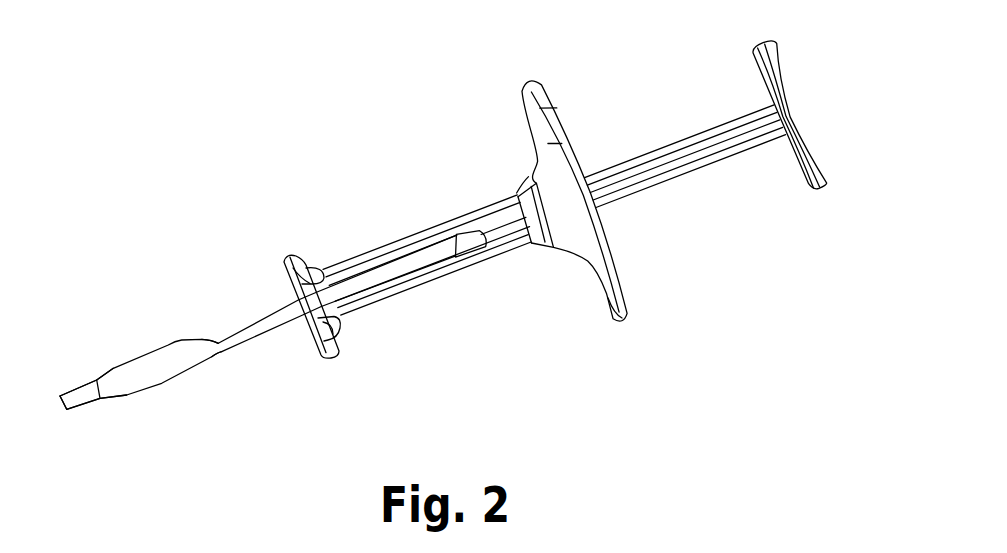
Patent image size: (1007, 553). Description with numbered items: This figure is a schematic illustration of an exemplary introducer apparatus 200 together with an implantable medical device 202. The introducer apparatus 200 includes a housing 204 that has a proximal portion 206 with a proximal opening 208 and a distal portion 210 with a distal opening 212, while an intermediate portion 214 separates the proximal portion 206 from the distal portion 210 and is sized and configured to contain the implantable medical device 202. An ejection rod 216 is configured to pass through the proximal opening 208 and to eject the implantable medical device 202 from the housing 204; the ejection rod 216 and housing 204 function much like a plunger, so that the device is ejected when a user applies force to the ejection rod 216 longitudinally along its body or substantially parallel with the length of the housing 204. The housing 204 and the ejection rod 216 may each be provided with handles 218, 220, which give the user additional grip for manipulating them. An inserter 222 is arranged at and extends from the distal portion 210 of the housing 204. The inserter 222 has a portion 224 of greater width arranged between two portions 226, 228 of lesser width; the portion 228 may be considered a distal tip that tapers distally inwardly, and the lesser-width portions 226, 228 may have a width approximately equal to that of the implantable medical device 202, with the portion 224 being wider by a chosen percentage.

The introducer apparatus 200 is at (212, 163).
The implantable medical device 202 is at (417, 260).
The housing 204 is at (420, 197).
The proximal portion 206 is at (650, 201).
The proximal opening 208 is at (588, 170).
The distal portion 210 is at (295, 220).
The distal opening 212 is at (301, 343).
The intermediate portion 214 is at (500, 235).
The ejection rod 216 is at (688, 148).
The handle 218 is at (630, 312).
The handle 220 is at (823, 190).
The inserter 222 is at (243, 345).
The portion having a greater width 224 is at (162, 383).
The portion having a lesser width 226 is at (218, 340).
The portion having a lesser width (distal tip) 228 is at (63, 396).